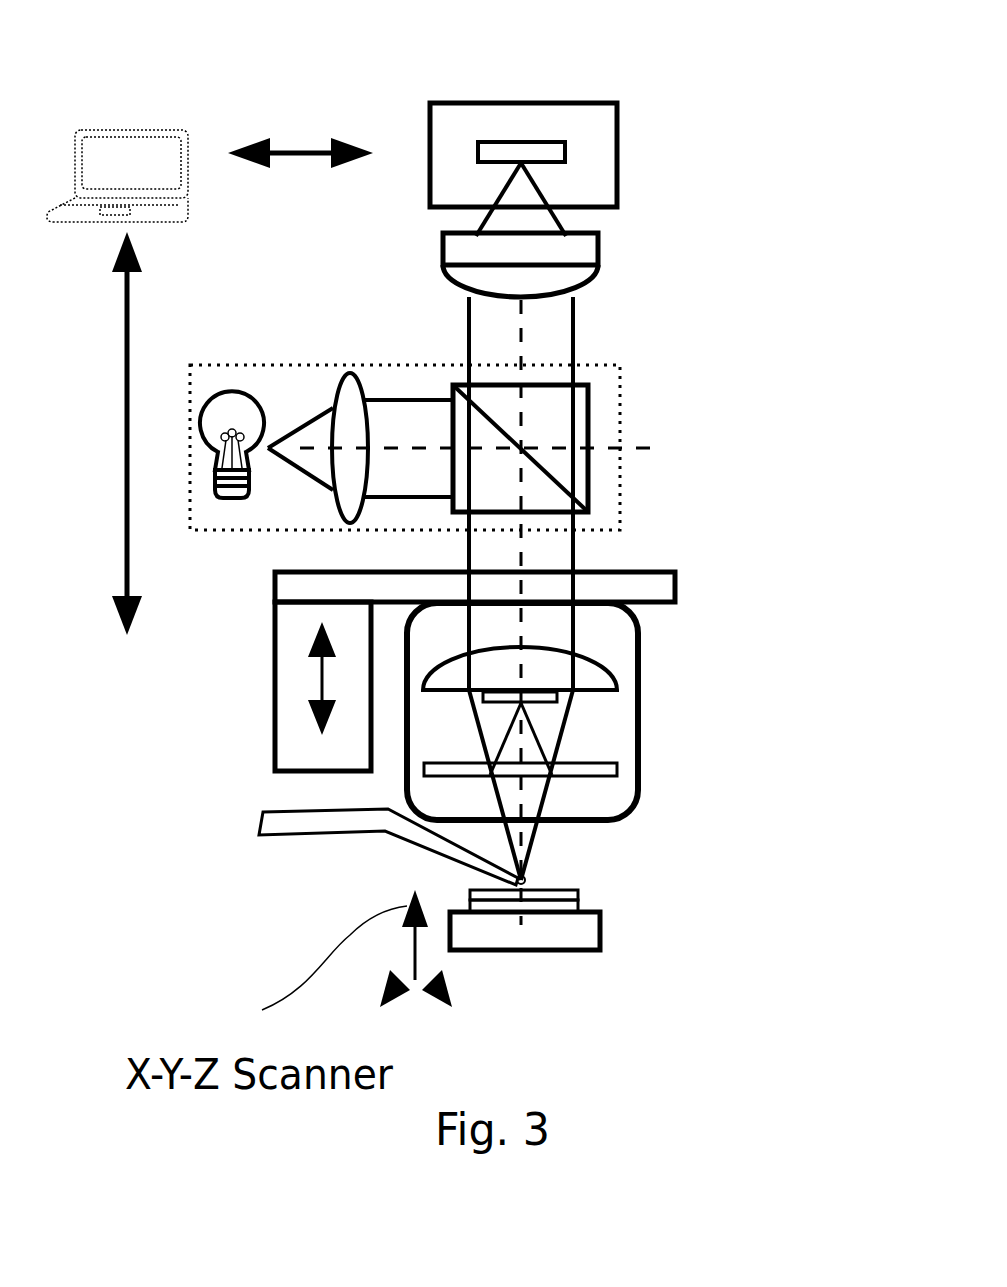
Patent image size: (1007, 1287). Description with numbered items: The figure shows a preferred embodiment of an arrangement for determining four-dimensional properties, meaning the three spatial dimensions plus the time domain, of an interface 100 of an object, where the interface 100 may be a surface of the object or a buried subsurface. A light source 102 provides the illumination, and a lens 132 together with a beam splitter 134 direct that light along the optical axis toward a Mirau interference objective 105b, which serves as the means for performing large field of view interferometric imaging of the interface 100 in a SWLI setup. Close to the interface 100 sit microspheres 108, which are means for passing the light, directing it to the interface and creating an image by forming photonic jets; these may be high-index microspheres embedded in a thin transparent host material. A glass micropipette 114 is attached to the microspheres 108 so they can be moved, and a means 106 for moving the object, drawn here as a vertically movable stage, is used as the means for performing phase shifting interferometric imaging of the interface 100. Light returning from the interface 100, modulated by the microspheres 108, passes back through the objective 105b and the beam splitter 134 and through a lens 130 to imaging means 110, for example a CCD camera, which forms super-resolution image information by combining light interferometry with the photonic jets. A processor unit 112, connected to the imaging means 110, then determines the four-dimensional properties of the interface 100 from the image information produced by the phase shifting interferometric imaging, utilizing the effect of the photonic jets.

The interface 100 is at (580, 893).
The light source 102 is at (232, 500).
The Mirau interference objective 105b is at (668, 735).
The means for performing phase shifting interferometric imaging 106 is at (272, 751).
The microspheres 108 is at (530, 883).
The imaging means 110 is at (618, 120).
The processor unit 112 is at (80, 132).
The glass micropipette 114 is at (262, 823).
The lens 130 is at (600, 248).
The collimating lens 132 is at (360, 372).
The beam splitter 134 is at (574, 495).